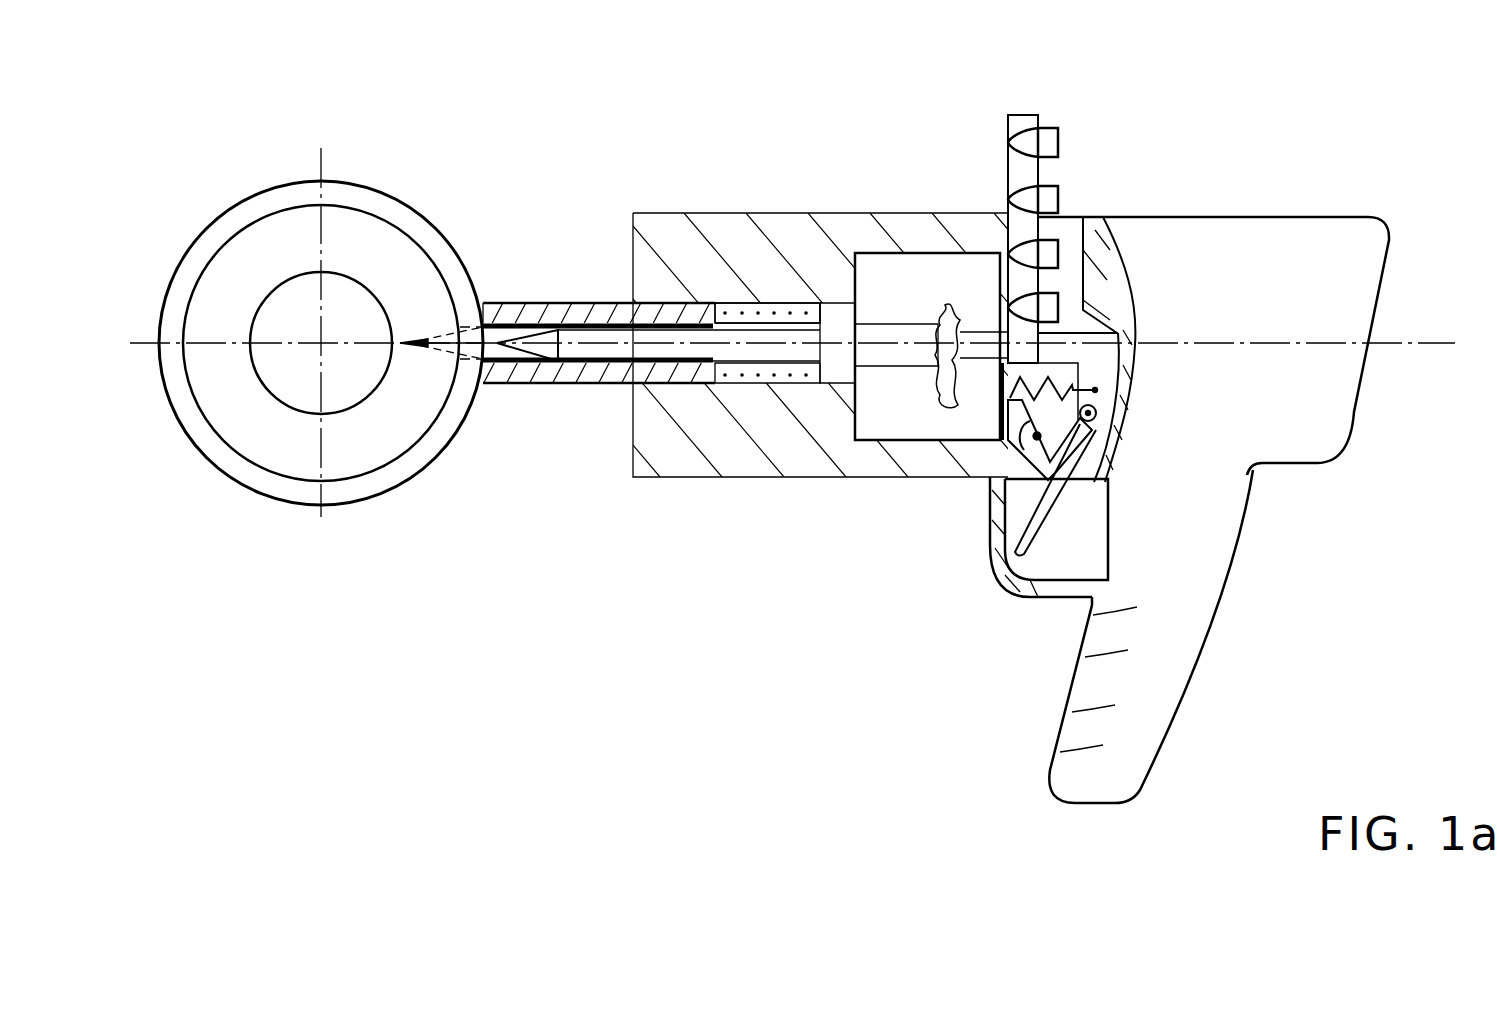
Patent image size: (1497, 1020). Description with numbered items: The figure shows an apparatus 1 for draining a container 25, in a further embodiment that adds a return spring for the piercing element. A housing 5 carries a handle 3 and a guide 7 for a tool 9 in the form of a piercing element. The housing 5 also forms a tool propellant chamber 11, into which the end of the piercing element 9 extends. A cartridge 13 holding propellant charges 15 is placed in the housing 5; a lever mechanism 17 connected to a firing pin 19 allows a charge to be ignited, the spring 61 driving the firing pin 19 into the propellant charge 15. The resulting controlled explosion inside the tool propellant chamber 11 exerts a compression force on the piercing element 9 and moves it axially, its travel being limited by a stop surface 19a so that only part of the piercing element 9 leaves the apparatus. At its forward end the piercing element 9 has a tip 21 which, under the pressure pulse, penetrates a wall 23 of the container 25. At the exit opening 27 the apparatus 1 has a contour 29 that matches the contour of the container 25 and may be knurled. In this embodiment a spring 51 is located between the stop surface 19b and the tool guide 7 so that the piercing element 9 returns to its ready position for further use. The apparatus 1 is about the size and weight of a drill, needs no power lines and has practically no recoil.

The apparatus 1 is at (597, 752).
The handle 3 is at (1110, 782).
The housing 5 is at (1330, 427).
The guide 7 is at (732, 400).
The tool 9 is at (730, 342).
The tool propellant chamber 11 is at (873, 420).
The cartridge 13 is at (1020, 122).
The propellant charge 15 is at (1062, 135).
The lever mechanism 17 is at (1030, 590).
The firing pin 19 is at (1056, 343).
The stop surface 19a is at (722, 374).
The stop surface 19b is at (812, 378).
The tip 21 is at (530, 385).
The wall 23 is at (375, 484).
The container 25 is at (265, 520).
The exit opening 27 is at (497, 350).
The contour 29 is at (478, 312).
The spring 51 is at (763, 308).
The spring 61 is at (1002, 445).